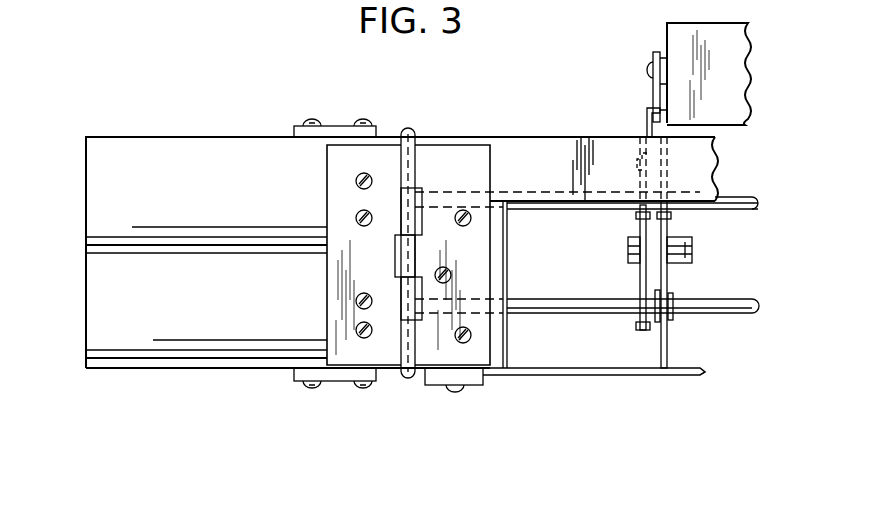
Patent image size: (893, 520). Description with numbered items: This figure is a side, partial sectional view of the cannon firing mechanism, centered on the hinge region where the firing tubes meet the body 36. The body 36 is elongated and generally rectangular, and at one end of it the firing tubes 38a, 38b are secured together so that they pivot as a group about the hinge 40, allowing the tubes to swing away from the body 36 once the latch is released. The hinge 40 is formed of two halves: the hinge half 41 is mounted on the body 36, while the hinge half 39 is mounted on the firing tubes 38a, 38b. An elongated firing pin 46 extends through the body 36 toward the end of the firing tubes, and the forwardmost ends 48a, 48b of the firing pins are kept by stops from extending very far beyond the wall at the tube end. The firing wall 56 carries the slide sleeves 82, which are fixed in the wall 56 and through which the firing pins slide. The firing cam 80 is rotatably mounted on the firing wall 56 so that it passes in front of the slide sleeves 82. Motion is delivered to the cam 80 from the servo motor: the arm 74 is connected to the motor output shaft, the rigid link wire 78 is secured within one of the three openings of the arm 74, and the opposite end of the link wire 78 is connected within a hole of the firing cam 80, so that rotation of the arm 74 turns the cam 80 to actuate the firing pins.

The body 36 is at (695, 387).
The firing tube 38a is at (181, 152).
The firing tube 38b is at (168, 333).
The hinge half 39 is at (338, 187).
The hinge 40 is at (410, 378).
The hinge half 41 is at (430, 155).
The firing pin 46 is at (577, 317).
The forwardmost end of firing pin 48a is at (452, 190).
The forwardmost end of firing pin 48b is at (465, 300).
The firing wall 56 is at (670, 273).
The arm 74 is at (650, 62).
The rigid link wire 78 is at (645, 118).
The firing cam 80 is at (640, 273).
The slide sleeve 82 is at (672, 320).